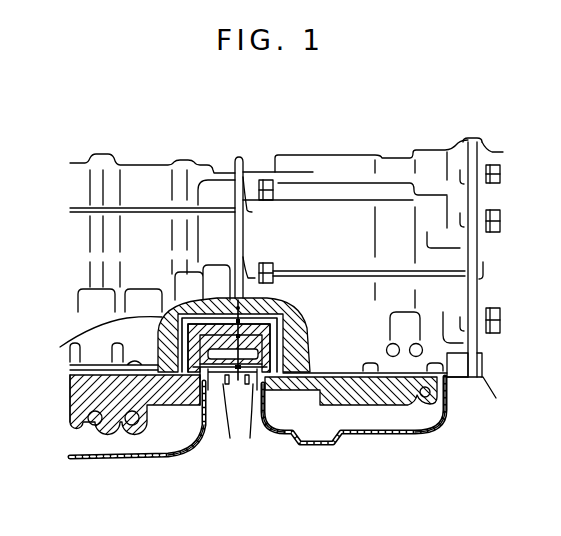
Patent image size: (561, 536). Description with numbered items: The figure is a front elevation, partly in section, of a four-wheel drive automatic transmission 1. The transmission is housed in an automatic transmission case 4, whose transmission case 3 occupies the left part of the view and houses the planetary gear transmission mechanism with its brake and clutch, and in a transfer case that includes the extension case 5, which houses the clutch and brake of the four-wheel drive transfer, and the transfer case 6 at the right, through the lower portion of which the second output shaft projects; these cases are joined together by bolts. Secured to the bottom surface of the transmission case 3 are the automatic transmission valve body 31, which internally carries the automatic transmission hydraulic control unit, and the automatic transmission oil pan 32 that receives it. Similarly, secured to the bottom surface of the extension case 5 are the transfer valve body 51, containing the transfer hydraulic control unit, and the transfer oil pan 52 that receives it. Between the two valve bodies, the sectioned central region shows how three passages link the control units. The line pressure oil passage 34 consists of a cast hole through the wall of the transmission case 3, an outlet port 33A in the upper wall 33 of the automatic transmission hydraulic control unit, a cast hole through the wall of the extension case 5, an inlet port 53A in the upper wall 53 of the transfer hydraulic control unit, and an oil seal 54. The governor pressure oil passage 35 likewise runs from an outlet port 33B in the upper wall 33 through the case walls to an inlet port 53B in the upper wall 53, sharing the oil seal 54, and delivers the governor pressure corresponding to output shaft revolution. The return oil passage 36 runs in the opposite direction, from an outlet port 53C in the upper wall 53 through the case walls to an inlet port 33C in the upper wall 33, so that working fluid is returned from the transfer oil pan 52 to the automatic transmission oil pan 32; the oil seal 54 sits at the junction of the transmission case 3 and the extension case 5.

The four-wheel drive automatic transmission 1 is at (90, 148).
The transmission case 3 is at (144, 170).
The automatic transmission case 4 is at (430, 143).
The extension case 5 is at (345, 173).
The transfer case 6 is at (490, 151).
The automatic transmission valve body 31 is at (90, 427).
The automatic transmission oil pan 32 is at (135, 457).
The upper wall of the automatic transmission hydraulic control unit 33 is at (93, 388).
The outlet port 33A is at (167, 400).
The outlet port 33B is at (192, 390).
The inlet port 33C is at (203, 443).
The line pressure oil passage 34 is at (117, 322).
The governor pressure oil passage 35 is at (200, 334).
The return oil passage 36 is at (218, 385).
The transfer valve body 51 is at (373, 406).
The transfer oil pan 52 is at (410, 433).
The upper wall of the transfer hydraulic control unit 53 is at (444, 411).
The inlet port 53A is at (303, 375).
The inlet port 53B is at (277, 384).
The outlet port 53C is at (258, 413).
The oil seal 54 is at (245, 296).